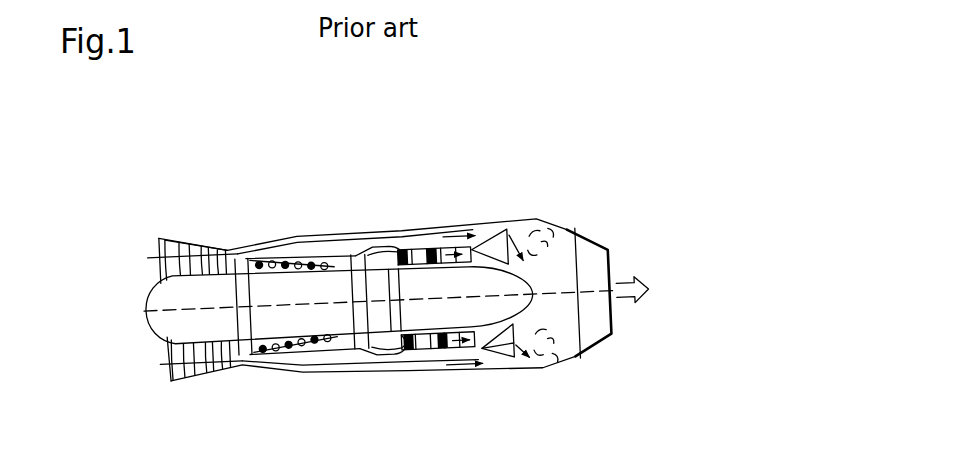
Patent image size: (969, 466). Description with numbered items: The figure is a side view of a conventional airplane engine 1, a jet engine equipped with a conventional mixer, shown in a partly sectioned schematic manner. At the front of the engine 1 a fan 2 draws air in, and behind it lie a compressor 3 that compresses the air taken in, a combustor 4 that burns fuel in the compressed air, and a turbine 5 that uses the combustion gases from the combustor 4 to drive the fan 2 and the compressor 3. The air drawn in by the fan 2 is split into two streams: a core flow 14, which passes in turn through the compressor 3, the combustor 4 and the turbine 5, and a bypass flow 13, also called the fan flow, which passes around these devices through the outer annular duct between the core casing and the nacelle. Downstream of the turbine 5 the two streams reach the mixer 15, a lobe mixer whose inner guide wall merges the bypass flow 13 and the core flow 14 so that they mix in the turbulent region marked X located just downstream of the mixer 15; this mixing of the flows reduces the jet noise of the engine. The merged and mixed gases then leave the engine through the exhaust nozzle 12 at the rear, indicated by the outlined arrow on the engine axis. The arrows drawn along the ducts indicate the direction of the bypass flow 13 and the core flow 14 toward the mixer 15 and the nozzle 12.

The airplane engine 1 is at (393, 163).
The fan 2 is at (213, 258).
The compressor 3 is at (293, 262).
The combustor 4 is at (373, 258).
The turbine 5 is at (435, 250).
The exhaust nozzle 12 is at (602, 246).
The bypass flow 13 is at (352, 368).
The core flow 14 is at (399, 347).
The mixer 15 is at (513, 358).